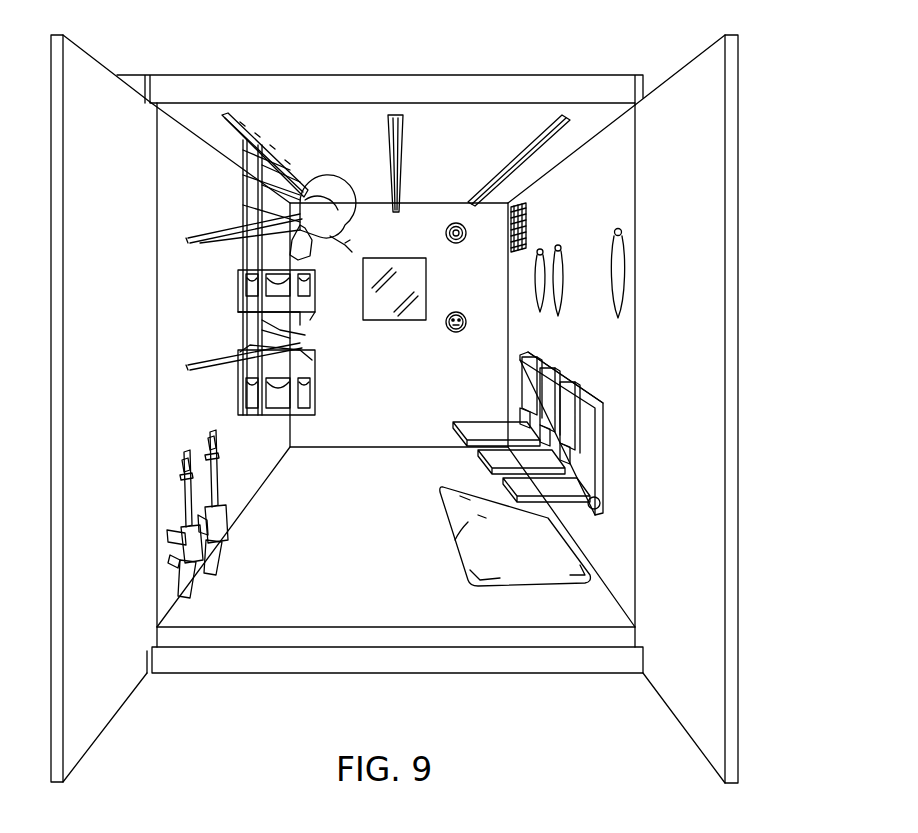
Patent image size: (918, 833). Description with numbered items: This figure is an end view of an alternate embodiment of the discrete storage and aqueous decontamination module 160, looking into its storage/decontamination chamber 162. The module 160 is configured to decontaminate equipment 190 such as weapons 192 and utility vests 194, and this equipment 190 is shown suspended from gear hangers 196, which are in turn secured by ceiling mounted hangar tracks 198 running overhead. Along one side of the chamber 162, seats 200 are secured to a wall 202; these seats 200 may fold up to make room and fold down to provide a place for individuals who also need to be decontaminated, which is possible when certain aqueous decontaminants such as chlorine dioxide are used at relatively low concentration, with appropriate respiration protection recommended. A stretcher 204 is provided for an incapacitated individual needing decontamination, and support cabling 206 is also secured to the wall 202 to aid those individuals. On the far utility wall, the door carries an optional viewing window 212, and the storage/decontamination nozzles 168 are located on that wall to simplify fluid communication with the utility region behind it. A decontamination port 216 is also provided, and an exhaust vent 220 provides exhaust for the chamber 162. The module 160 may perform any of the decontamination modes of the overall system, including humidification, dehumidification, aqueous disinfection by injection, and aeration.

The storage and aqueous decontamination module 160 is at (760, 60).
The storage/decontamination chamber 162 is at (600, 186).
The ceiling mounted hangar tracks 198 is at (230, 114).
The gear hangers 196 is at (200, 230).
The equipment 190 is at (289, 369).
The utility vests 194 is at (297, 277).
The weapons 192 is at (197, 514).
The viewing window 212 is at (404, 272).
The storage/decontamination nozzles 168 is at (456, 244).
The decontamination port 216 is at (457, 333).
The exhaust vent 220 is at (528, 218).
The support cabling 206 is at (622, 258).
The wall 202 is at (602, 357).
The seats 200 is at (605, 452).
The stretcher 204 is at (475, 523).